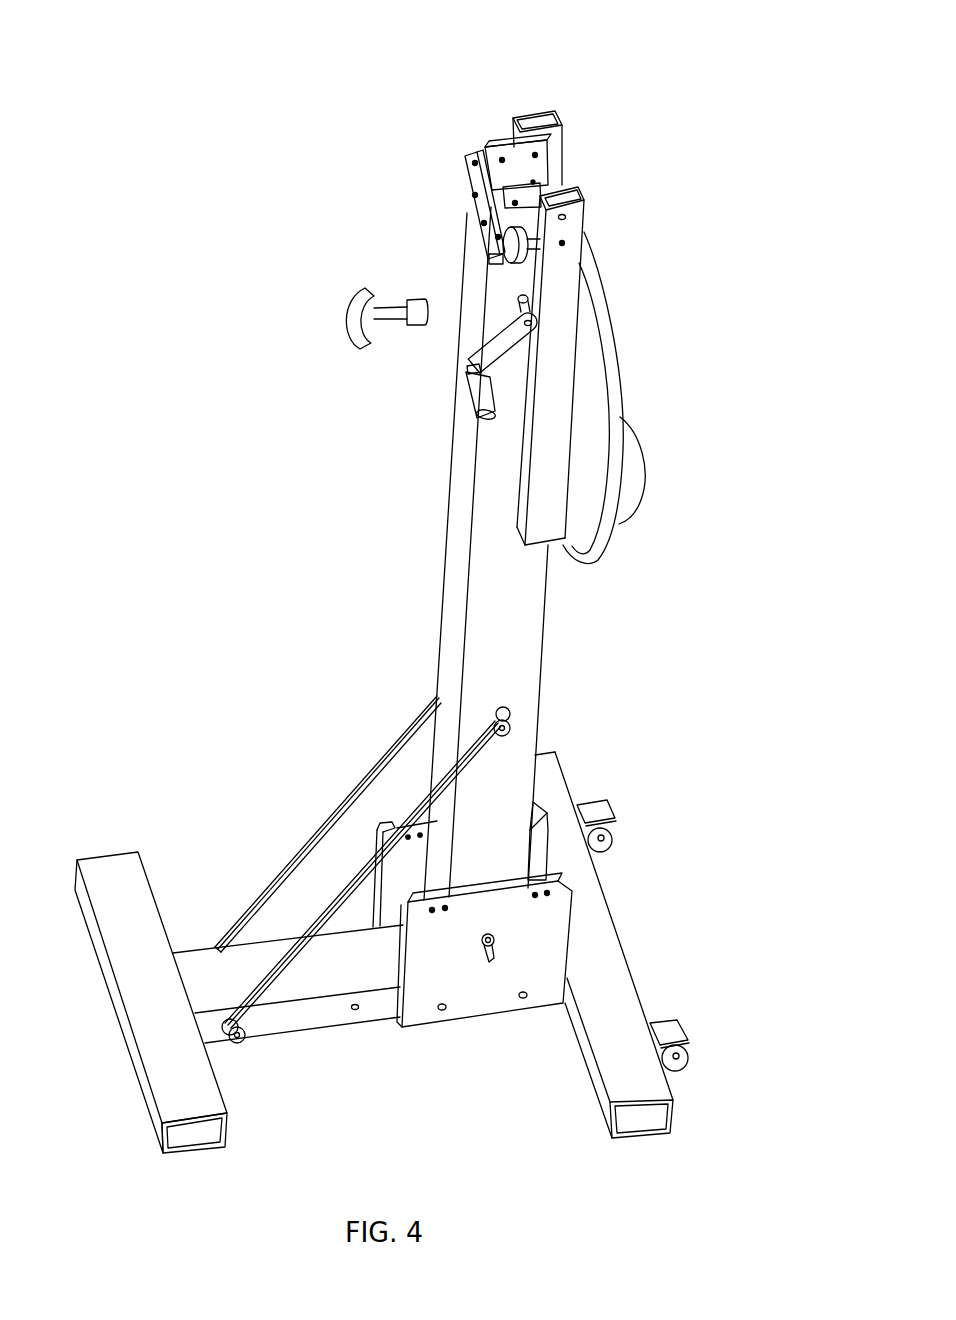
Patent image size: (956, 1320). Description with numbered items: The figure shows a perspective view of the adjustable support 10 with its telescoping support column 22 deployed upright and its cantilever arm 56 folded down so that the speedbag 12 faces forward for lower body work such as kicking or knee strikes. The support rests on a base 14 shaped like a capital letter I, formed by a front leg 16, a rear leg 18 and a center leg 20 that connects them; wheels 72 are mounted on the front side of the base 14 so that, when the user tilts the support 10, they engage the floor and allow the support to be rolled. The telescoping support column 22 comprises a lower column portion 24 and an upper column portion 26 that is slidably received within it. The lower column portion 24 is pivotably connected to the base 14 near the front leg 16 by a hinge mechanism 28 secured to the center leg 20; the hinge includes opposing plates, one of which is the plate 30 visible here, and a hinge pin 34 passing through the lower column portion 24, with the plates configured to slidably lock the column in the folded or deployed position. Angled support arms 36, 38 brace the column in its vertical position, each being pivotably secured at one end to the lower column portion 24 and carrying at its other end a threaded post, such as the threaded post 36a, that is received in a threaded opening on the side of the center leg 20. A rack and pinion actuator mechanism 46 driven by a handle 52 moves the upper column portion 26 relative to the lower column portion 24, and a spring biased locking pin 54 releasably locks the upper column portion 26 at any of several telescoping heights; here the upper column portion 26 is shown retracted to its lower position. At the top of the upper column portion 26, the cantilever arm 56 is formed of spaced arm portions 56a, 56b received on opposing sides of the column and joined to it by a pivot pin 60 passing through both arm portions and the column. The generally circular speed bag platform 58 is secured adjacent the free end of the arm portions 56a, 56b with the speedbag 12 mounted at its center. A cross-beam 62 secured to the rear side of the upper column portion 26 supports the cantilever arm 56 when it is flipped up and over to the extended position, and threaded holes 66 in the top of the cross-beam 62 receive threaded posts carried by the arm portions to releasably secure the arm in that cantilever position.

The adjustable support 10 is at (710, 165).
The speedbag 12 is at (635, 470).
The base 14 is at (408, 1058).
The front leg 16 is at (617, 980).
The rear leg 18 is at (113, 868).
The center leg 20 is at (212, 962).
The telescoping support column 22 is at (380, 660).
The lower column portion 24 is at (530, 625).
The upper column portion 26 is at (512, 153).
The hinge mechanism 28 is at (560, 933).
The hinge plate 30 is at (497, 990).
The hinge pin 34 is at (494, 940).
The angled support arm 36 is at (292, 958).
The threaded post 36a is at (245, 1036).
The angled support arm 38 is at (317, 847).
The rack and pinion actuator mechanism 46 is at (440, 360).
The handle 52 is at (477, 397).
The spring biased locking pin 54 is at (424, 324).
The cantilever arm 56 is at (632, 246).
The arm portion 56a is at (567, 282).
The arm portion 56b is at (540, 122).
The speed bag platform 58 is at (610, 397).
The pivot pin 60 is at (567, 217).
The cross-beam 62 is at (472, 190).
The threaded holes 66 is at (475, 163).
The wheels 72 is at (678, 1030).